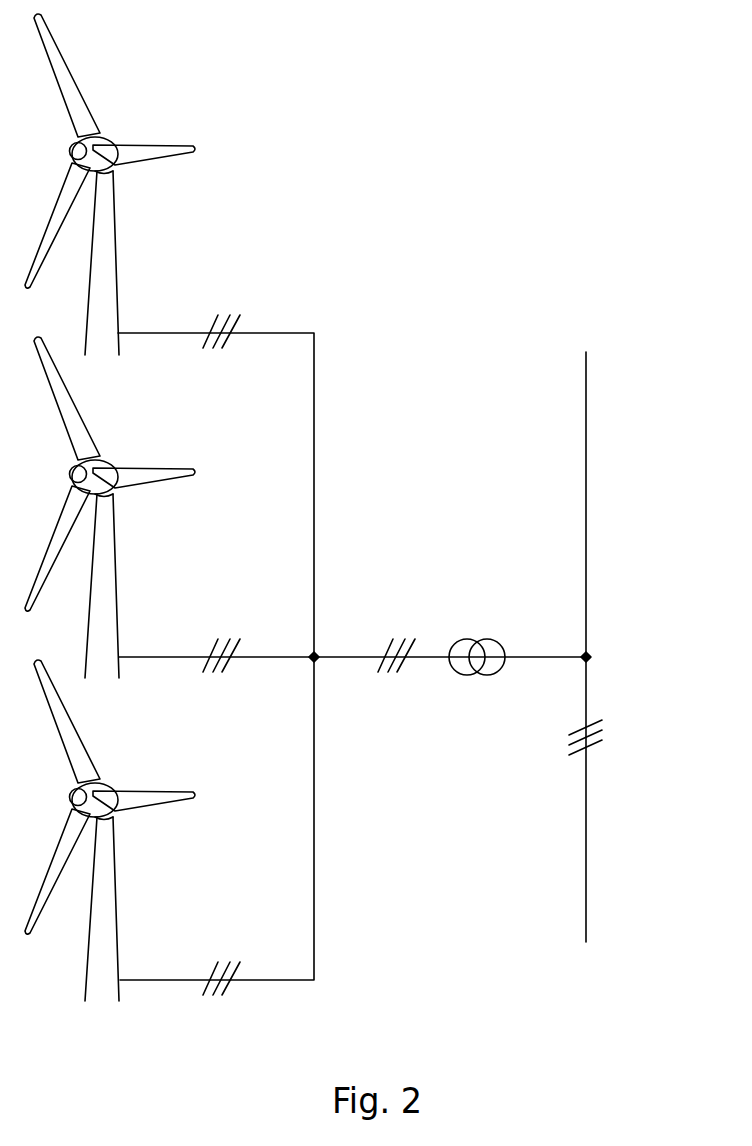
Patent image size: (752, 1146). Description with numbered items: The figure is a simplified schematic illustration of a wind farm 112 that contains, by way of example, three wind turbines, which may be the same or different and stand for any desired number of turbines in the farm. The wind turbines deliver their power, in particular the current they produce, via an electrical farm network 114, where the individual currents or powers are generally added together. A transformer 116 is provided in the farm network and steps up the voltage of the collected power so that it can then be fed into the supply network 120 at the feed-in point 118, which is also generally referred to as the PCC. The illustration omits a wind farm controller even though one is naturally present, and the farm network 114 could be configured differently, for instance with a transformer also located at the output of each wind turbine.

The wind farm 112 is at (447, 271).
The electrical farm network 114 is at (340, 655).
The transformer 116 is at (480, 620).
The feed-in point 118 is at (605, 629).
The supply network 120 is at (588, 417).